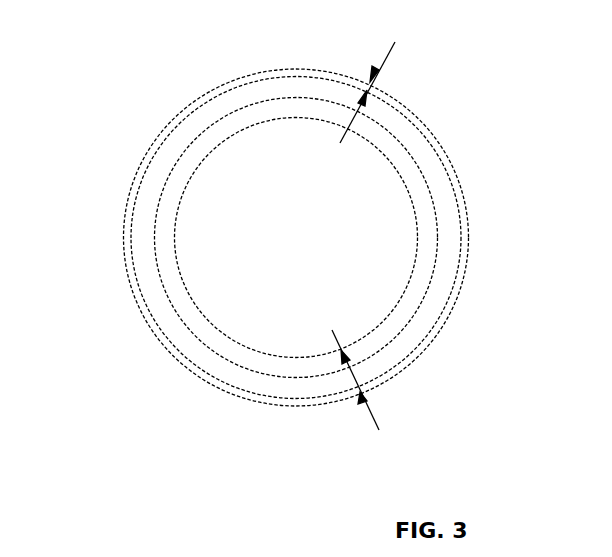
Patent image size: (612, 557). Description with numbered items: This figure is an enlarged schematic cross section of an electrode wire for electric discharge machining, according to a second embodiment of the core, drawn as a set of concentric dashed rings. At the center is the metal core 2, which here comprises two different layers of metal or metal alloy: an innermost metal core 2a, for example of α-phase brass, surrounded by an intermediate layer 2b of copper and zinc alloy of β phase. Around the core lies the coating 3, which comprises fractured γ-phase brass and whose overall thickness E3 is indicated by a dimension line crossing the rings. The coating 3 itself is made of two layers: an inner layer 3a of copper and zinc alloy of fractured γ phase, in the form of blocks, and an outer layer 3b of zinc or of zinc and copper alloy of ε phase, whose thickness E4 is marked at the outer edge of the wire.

The metal core 2 is at (284, 219).
The metal core 2a is at (237, 168).
The intermediate layer 2b is at (160, 223).
The coating 3 is at (347, 221).
The inner layer 3a is at (440, 185).
The outer layer 3b is at (432, 132).
The thickness of the coating E3 is at (358, 394).
The thickness of the outer layer E4 is at (372, 82).